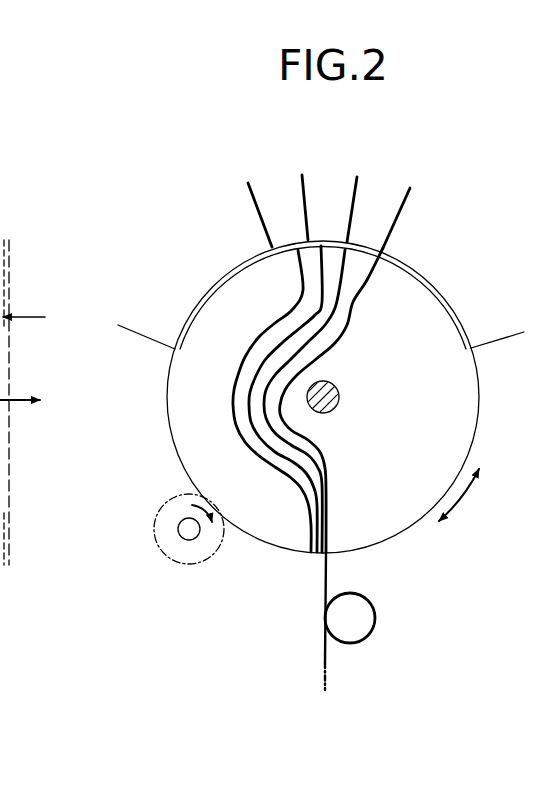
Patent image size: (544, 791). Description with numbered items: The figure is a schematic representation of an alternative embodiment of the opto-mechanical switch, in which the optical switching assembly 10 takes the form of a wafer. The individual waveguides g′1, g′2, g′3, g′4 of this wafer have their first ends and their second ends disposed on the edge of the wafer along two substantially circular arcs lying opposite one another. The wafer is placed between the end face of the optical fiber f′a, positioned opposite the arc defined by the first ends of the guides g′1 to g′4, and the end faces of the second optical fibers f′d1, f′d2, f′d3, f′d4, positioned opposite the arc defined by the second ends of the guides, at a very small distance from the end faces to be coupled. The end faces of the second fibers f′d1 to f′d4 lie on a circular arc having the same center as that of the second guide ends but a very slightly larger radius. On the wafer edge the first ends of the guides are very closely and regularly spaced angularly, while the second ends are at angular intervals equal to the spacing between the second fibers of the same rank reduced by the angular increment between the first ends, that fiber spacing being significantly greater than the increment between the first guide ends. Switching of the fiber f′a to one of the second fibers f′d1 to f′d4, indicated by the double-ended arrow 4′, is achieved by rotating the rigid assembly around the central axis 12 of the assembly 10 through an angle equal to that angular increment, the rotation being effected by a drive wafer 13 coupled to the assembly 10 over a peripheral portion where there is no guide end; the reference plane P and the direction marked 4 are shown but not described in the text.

The optical switching assembly 10 is at (437, 428).
The central axis 12 is at (339, 397).
The drive wafer 13 is at (211, 557).
The feed direction 4 is at (4, 396).
The double-ended arrow 4′ is at (463, 494).
The reference plane P is at (24, 402).
The second optical fiber f′d1 is at (403, 212).
The second optical fiber f′d2 is at (358, 184).
The second optical fiber f′d3 is at (302, 187).
The second optical fiber f′d4 is at (255, 202).
The waveguide g′1 is at (351, 317).
The waveguide g′2 is at (340, 293).
The waveguide g′3 is at (318, 303).
The waveguide g′4 is at (303, 290).
The optical fiber f′a is at (323, 640).